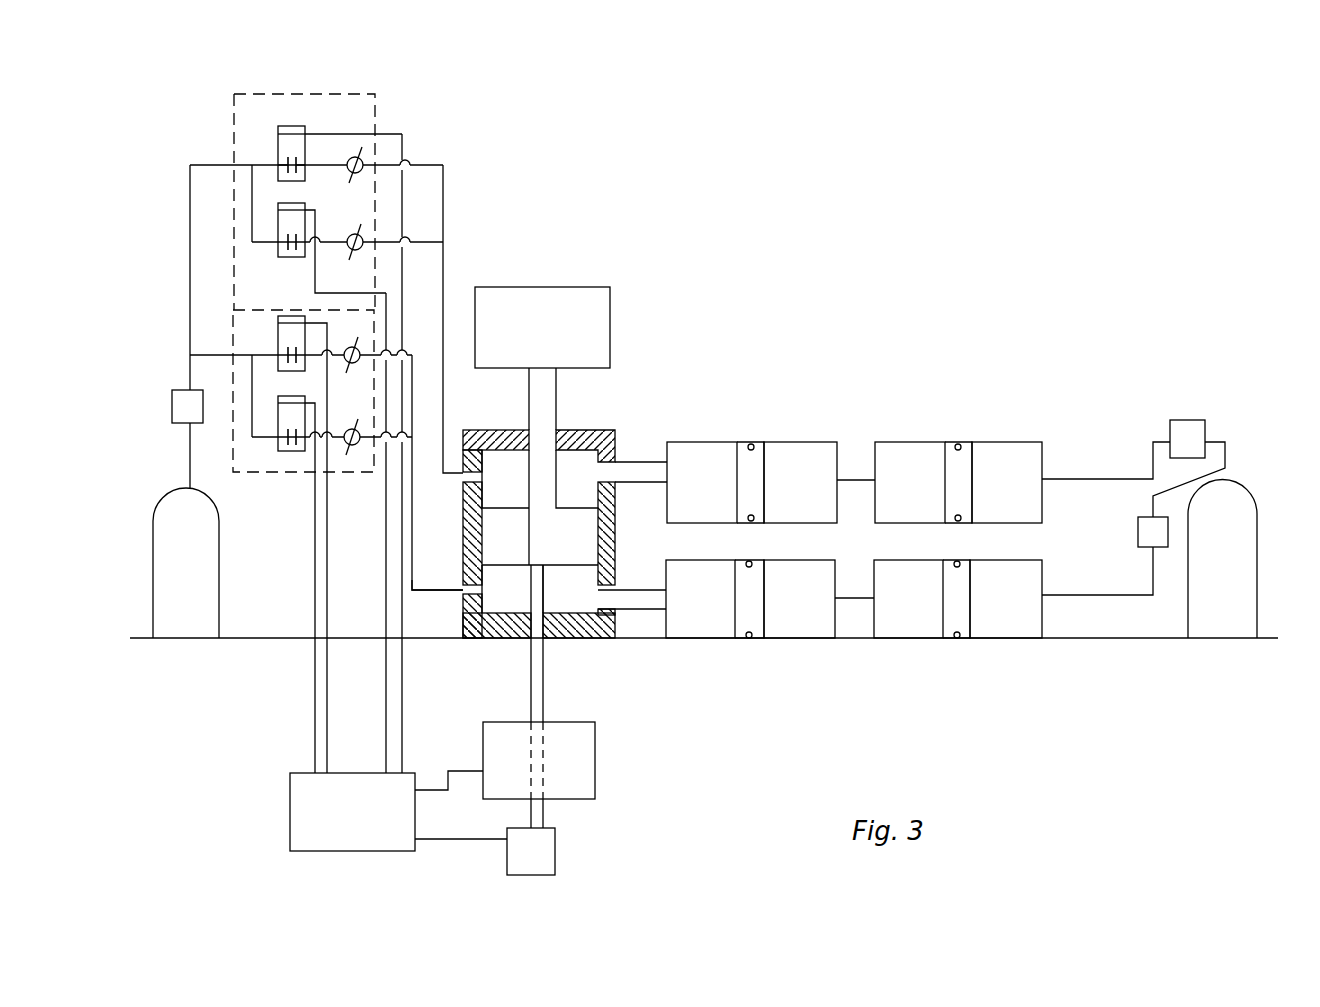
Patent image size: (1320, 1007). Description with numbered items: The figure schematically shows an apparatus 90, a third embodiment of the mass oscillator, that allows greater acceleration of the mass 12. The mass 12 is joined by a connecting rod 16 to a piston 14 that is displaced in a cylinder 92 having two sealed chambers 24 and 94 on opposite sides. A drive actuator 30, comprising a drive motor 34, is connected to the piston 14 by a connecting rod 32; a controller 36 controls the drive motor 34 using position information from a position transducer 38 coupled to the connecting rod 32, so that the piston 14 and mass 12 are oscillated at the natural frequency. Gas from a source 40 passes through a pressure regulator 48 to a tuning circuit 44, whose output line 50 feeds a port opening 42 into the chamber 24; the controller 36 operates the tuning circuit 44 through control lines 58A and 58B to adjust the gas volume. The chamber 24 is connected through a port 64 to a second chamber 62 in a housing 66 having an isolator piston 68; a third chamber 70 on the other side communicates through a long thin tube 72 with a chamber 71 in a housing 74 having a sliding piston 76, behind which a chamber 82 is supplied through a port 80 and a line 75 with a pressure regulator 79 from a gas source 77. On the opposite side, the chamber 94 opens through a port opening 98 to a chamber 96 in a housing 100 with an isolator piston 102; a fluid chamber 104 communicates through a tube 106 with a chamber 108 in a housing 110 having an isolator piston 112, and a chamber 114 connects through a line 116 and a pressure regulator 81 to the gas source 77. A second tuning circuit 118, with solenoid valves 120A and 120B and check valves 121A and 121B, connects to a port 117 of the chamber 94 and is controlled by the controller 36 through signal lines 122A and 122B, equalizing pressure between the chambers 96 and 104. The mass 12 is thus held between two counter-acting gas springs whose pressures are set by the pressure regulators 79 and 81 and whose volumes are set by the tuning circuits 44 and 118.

The mass 12 is at (610, 320).
The piston 14 is at (568, 507).
The connecting rod 16 is at (560, 401).
The chamber 24 is at (508, 616).
The drive actuator 30 is at (605, 728).
The connecting rod 32 is at (544, 683).
The drive motor 34 is at (596, 760).
The controller 36 is at (400, 762).
The position transducer 38 is at (556, 851).
The source 40 is at (153, 546).
The port opening 42 is at (462, 592).
The tuning circuit 44 is at (232, 335).
The pressure regulator 48 is at (172, 405).
The output line 50 is at (417, 543).
The control line 58A is at (322, 684).
The control line 58B is at (313, 724).
The second chamber 62 is at (690, 641).
The port 64 is at (618, 590).
The housing 66 is at (783, 535).
The isolator piston 68 is at (742, 641).
The third chamber 70 is at (809, 641).
The chamber 71 is at (891, 641).
The tube 72 is at (848, 598).
The housing 74 is at (892, 560).
The line 75 is at (1096, 596).
The sliding piston 76 is at (942, 641).
The gas source 77 is at (1243, 535).
The pressure regulator 79 is at (1138, 521).
The port 80 is at (1045, 594).
The pressure regulator 81 is at (1192, 420).
The chamber 82 is at (1005, 641).
The apparatus 90 is at (717, 198).
The cylinder 92 is at (616, 445).
The chamber 94 is at (509, 440).
The chamber 96 is at (708, 440).
The port opening 98 is at (616, 490).
The housing 100 is at (799, 440).
The isolator piston 102 is at (740, 440).
The chamber 104 is at (828, 440).
The tube 106 is at (848, 480).
The chamber 108 is at (913, 440).
The housing 110 is at (1043, 450).
The isolator piston 112 is at (957, 440).
The chamber 114 is at (1023, 440).
The line 116 is at (1073, 478).
The port 117 is at (463, 482).
The second tuning circuit 118 is at (338, 93).
The solenoid valve 120A is at (278, 144).
The solenoid valve 120B is at (278, 222).
The check valve 121A is at (363, 150).
The check valve 121B is at (359, 232).
The signal line 122A is at (400, 537).
The signal line 122B is at (386, 503).